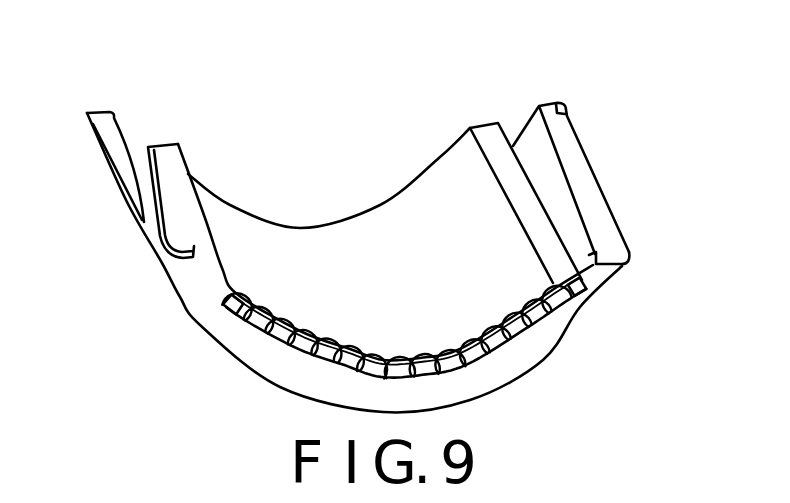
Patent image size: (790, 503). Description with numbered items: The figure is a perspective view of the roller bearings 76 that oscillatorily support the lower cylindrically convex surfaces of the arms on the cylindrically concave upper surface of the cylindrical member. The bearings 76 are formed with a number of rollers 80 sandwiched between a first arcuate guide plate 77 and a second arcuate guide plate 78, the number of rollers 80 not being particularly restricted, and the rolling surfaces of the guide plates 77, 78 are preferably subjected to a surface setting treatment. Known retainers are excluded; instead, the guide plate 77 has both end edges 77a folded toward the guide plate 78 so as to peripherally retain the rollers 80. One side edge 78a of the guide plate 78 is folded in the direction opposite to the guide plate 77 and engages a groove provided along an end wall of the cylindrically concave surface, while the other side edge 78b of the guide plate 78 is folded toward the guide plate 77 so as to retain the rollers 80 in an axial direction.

The roller bearings 76 is at (250, 182).
The first arcuate guide plate 77 is at (445, 187).
The end edges 77a is at (190, 218).
The second arcuate guide plate 78 is at (584, 178).
The side edge 78a is at (555, 108).
The other side edge 78b is at (575, 317).
The rollers 80 is at (497, 350).